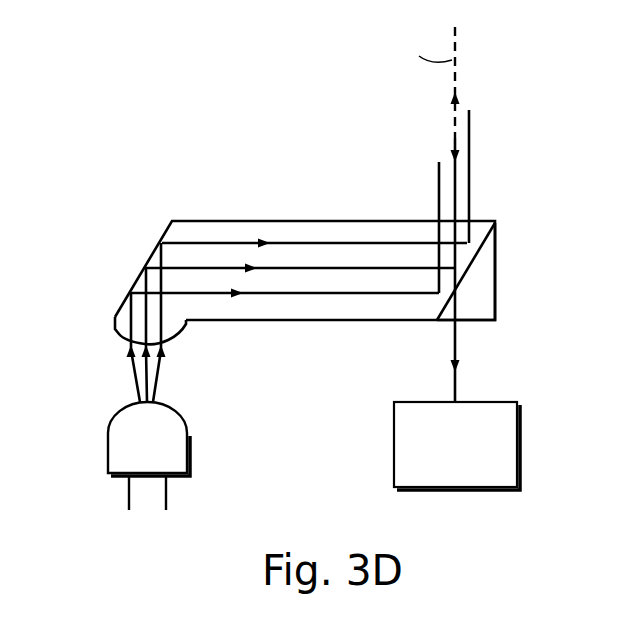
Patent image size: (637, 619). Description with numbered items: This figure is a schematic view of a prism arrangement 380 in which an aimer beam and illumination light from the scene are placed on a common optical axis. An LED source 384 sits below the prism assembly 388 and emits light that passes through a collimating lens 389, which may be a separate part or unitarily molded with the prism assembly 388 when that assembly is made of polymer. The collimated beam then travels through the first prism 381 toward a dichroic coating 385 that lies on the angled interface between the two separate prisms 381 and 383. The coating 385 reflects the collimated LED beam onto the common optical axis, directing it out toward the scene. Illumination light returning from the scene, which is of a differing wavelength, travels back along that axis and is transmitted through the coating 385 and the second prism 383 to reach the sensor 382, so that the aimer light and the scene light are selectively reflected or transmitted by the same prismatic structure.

The arrangement 380 is at (514, 136).
The prism 381 is at (297, 228).
The sensor 382 is at (457, 446).
The prism 383 is at (472, 290).
The LED source 384 is at (115, 450).
The dichroic coating 385 is at (485, 243).
The polymer prism assembly 388 is at (206, 230).
The collimating lens 389 is at (117, 336).